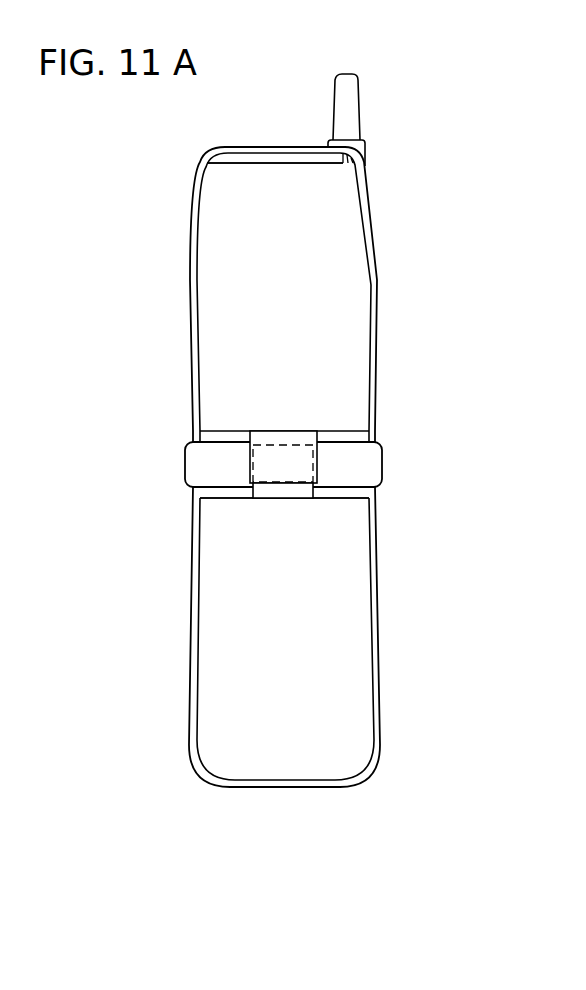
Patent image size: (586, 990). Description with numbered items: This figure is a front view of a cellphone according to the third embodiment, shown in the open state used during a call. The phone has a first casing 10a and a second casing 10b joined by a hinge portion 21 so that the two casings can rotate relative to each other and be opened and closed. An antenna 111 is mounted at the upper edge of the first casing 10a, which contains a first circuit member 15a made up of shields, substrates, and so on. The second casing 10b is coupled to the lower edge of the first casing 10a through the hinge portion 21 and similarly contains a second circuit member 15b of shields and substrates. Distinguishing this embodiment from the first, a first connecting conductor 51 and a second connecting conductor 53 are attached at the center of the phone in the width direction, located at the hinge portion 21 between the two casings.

The first casing 10a is at (378, 297).
The second casing 10b is at (376, 620).
The first circuit member 15a is at (213, 258).
The second circuit member 15b is at (218, 642).
The hinge portion 21 is at (382, 462).
The first connecting conductor 51 is at (248, 457).
The second connecting conductor 53 is at (253, 488).
The antenna 111 is at (355, 112).